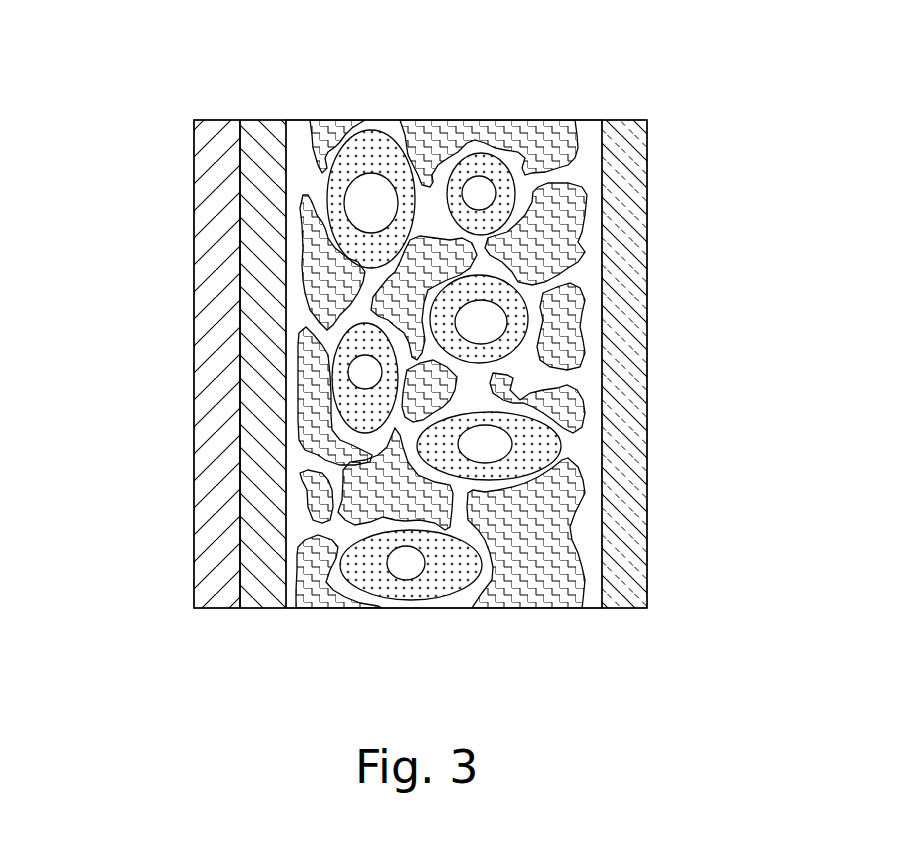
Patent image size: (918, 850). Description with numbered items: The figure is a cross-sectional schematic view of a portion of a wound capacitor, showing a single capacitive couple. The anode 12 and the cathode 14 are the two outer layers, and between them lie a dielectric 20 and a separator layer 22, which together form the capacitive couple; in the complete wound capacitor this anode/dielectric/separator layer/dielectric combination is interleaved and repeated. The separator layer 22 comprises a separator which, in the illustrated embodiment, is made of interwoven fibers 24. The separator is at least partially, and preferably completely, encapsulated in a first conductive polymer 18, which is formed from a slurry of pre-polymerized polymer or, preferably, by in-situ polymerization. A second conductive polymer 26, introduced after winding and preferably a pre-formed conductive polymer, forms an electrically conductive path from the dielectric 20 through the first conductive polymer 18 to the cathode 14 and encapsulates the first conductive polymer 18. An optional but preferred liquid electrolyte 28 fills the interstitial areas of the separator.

The anode 12 is at (220, 260).
The cathode 14 is at (628, 162).
The first conductive polymer 18 is at (373, 155).
The dielectric 20 is at (267, 137).
The separator layer 22 is at (602, 627).
The interwoven fibers 24 is at (483, 190).
The second conductive polymer 26 is at (585, 150).
The liquid electrolyte 28 is at (545, 235).